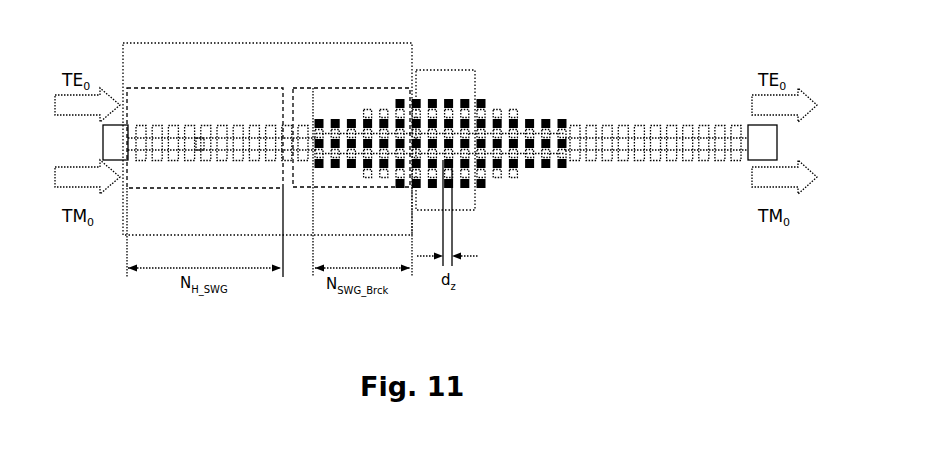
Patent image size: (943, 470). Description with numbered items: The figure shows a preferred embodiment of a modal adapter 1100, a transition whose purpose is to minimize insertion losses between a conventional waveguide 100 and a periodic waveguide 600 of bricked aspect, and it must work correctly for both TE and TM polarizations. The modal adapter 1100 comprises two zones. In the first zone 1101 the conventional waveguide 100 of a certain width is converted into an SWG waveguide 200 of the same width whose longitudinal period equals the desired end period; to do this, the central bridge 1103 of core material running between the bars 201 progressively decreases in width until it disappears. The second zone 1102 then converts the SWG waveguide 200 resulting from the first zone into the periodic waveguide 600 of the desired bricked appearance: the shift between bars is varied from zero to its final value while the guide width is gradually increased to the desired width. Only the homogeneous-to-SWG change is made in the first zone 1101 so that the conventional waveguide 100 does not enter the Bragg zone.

The modal adapter 1100 is at (236, 44).
The first zone 1101 is at (150, 88).
The second zone 1102 is at (327, 88).
The periodic waveguide 600 is at (440, 70).
The conventional waveguide 100 is at (110, 143).
The SWG waveguide 200 is at (300, 188).
The bars 201 is at (175, 158).
The central bridge 1103 is at (213, 152).